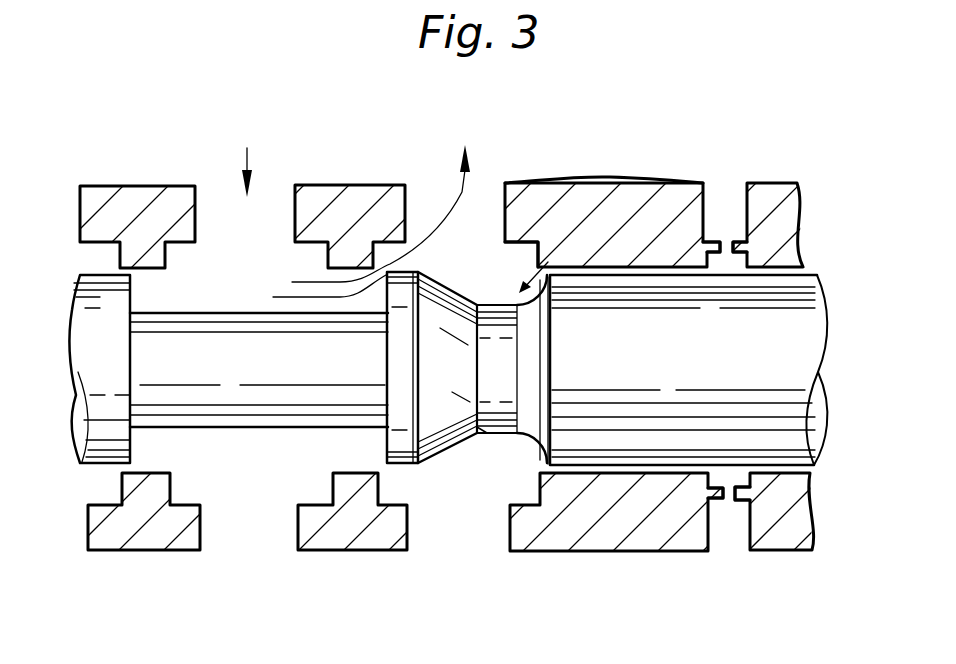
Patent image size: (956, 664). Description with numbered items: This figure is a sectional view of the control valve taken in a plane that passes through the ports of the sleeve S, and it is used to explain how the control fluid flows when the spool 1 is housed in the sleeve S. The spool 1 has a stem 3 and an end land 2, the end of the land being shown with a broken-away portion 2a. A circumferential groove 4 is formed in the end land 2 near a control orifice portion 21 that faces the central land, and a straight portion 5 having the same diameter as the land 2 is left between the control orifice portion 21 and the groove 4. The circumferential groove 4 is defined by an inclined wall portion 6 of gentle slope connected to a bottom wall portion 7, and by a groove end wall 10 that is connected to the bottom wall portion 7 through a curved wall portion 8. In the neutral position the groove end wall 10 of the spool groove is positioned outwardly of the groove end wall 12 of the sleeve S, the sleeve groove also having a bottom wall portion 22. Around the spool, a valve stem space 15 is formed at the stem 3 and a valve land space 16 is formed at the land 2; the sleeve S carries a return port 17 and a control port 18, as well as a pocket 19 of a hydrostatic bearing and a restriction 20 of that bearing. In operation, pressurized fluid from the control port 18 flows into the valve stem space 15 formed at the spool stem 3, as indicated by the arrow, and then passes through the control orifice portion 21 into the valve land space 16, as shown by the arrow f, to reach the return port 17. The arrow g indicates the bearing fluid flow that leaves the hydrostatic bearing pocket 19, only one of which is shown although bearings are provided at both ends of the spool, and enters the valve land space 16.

The spool 1 is at (835, 370).
The end land 2 is at (795, 313).
The shaft end flange 2a is at (103, 310).
The stem 3 is at (257, 400).
The circumferential groove 4 is at (490, 302).
The straight portion 5 is at (403, 465).
The inclined wall portion 6 is at (437, 452).
The bottom wall portion 7 is at (487, 434).
The curved wall portion 8 is at (540, 444).
The groove end wall 10 is at (550, 375).
The groove end wall of the sleeve 12 is at (538, 485).
The valve stem space 15 is at (247, 238).
The valve land space 16 is at (473, 243).
The return port 17 is at (410, 216).
The control port 18 is at (198, 207).
The pocket of a hydrostatic bearing 19 is at (795, 204).
The restriction of the hydrostatic bearing 20 is at (732, 250).
The control orifice portion 21 is at (310, 290).
The bottom wall portion of the circumferential groove in the sleeve 22 is at (508, 247).
The sleeve S is at (653, 203).
The arrow f is at (470, 178).
The arrow g is at (558, 278).